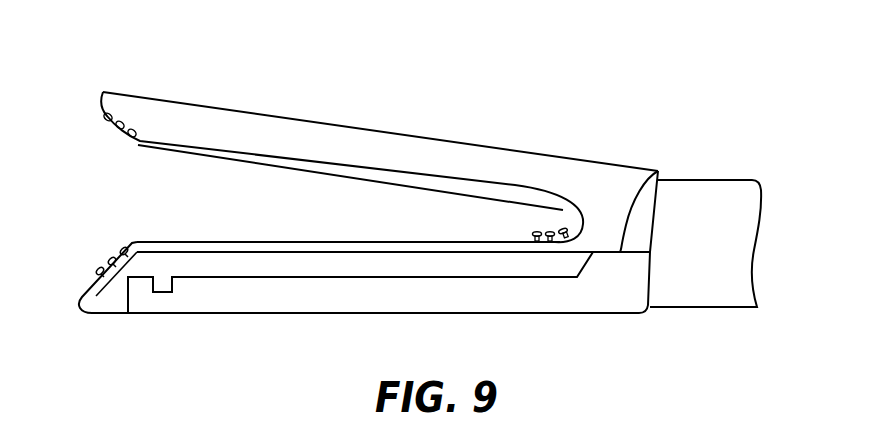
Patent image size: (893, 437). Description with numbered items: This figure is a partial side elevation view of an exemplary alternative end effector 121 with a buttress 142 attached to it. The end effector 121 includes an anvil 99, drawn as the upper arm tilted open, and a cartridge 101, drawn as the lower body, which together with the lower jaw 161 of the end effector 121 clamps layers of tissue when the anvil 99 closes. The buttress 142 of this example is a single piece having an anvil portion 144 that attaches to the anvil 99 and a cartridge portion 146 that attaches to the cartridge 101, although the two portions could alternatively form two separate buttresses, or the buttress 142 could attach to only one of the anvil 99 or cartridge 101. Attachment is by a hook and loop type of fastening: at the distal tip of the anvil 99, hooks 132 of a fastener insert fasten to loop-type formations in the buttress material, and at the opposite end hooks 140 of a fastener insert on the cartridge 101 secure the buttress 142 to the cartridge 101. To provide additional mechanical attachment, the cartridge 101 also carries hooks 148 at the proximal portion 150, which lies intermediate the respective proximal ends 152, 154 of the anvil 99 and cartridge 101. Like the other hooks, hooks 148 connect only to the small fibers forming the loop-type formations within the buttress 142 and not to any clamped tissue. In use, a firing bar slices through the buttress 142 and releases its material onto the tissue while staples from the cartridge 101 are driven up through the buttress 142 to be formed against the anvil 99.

The anvil 99 is at (259, 112).
The cartridge 101 is at (106, 313).
The end effector 121 is at (695, 95).
The hooks 132 is at (133, 136).
The hooks 140 is at (124, 249).
The buttress 142 is at (226, 242).
The anvil portion 144 is at (173, 145).
The cartridge portion 146 is at (332, 248).
The hooks 148 is at (563, 229).
The proximal portion 150 is at (580, 231).
The proximal end 152 is at (661, 178).
The proximal end 154 is at (611, 318).
The lower jaw 161 is at (248, 314).